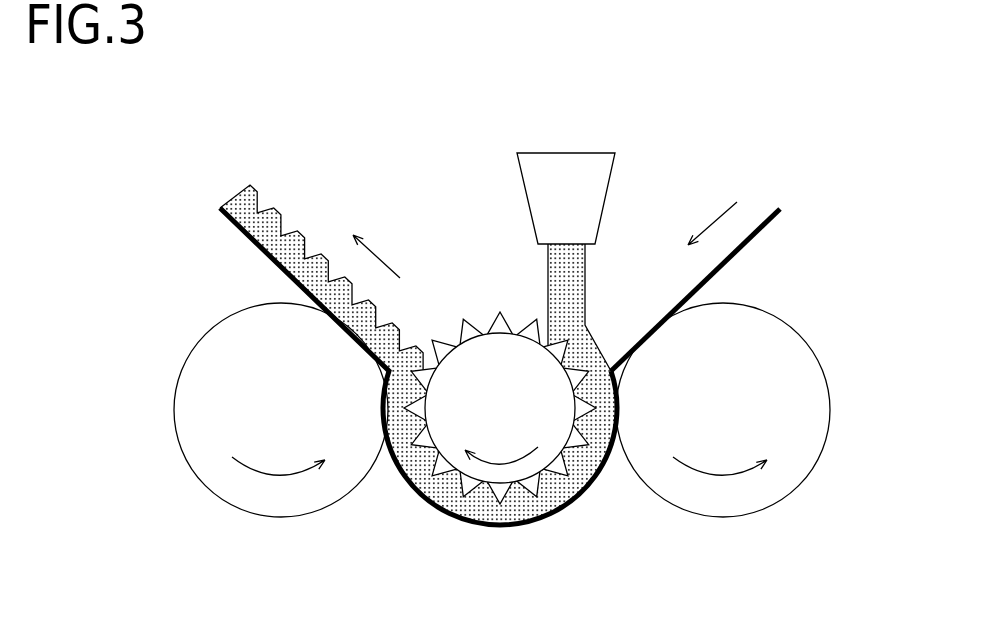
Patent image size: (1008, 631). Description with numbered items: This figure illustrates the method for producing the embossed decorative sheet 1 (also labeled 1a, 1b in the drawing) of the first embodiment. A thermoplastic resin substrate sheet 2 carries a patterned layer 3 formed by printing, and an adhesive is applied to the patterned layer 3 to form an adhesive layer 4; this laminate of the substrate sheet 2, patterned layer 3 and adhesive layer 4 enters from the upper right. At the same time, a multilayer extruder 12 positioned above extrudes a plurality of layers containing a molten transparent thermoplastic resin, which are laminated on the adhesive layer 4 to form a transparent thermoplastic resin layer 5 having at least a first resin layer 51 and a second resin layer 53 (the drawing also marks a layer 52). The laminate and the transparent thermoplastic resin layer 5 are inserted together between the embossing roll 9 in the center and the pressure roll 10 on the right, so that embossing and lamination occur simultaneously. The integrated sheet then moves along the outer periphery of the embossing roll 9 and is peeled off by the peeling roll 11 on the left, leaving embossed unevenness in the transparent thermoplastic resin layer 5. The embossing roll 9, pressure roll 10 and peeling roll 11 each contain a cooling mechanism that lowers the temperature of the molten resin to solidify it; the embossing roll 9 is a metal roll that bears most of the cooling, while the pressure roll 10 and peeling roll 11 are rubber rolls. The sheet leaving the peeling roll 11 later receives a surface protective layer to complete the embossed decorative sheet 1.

The embossed decorative sheet 1 is at (386, 307).
The first film layer 1a is at (386, 307).
The first film layer 1b is at (247, 116).
The thermoplastic resin substrate sheet 2 is at (730, 286).
The patterned layer 3 is at (730, 286).
The adhesive layer 4 is at (743, 240).
The transparent thermoplastic resin layer 5 is at (418, 355).
The first resin layer 51 is at (418, 355).
The content material 52 is at (418, 355).
The second resin layer 53 is at (547, 288).
The embossing roll 9 is at (557, 447).
The pressure roll 10 is at (822, 410).
The peeling roll 11 is at (180, 409).
The multilayer extruder 12 is at (575, 152).